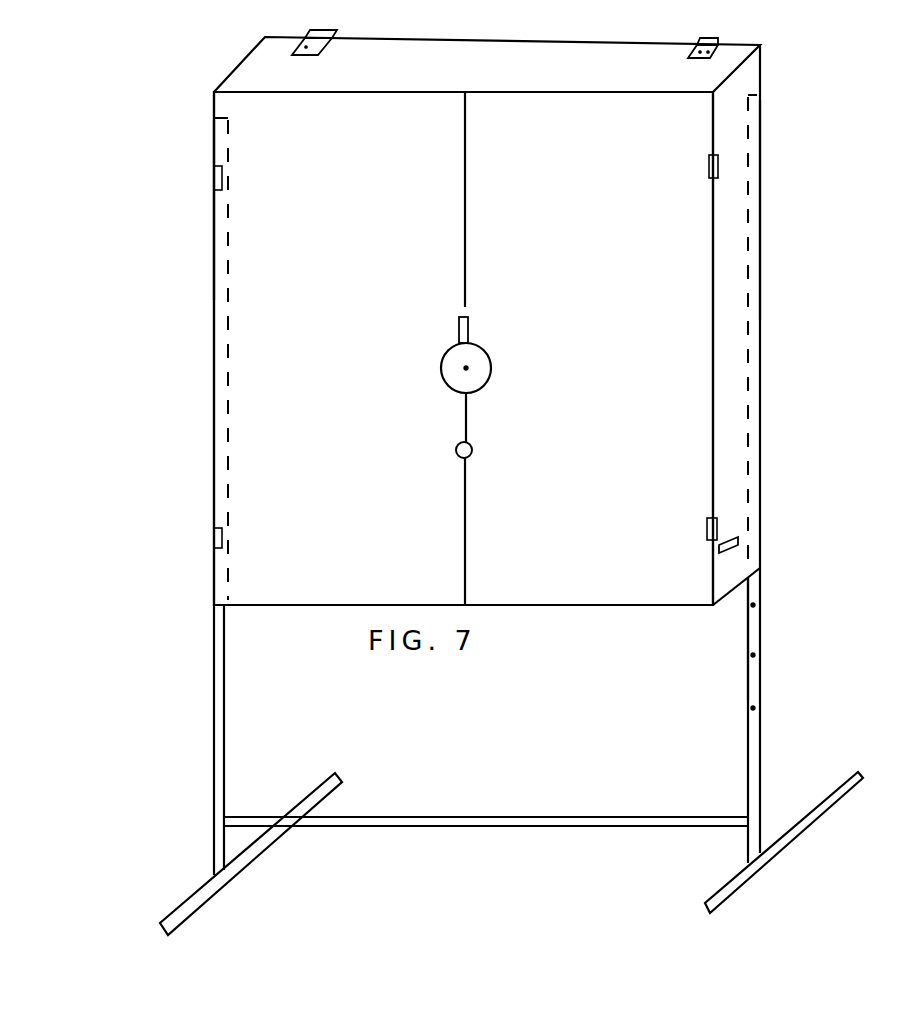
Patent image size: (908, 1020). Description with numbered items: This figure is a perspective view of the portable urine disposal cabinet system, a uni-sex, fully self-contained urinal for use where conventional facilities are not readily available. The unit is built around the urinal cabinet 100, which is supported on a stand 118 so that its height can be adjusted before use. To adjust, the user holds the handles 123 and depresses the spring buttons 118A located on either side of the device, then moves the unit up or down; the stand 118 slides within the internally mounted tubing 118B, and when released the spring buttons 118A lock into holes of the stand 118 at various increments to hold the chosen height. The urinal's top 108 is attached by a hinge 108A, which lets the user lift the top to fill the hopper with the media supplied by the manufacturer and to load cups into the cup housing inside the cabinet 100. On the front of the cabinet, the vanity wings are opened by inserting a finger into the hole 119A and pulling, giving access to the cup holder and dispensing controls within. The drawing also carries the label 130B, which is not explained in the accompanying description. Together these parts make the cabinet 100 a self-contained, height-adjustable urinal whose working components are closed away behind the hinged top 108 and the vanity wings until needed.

The urinal cabinet 100 is at (275, 320).
The top 108 is at (430, 75).
The hinge 108A is at (718, 40).
The stand 118 is at (762, 690).
The spring buttons 118A is at (755, 530).
The internally mounted tubing 118B is at (215, 220).
The hole 119A is at (455, 448).
The handles 123 is at (735, 552).
The combination lock dial 130B is at (480, 345).